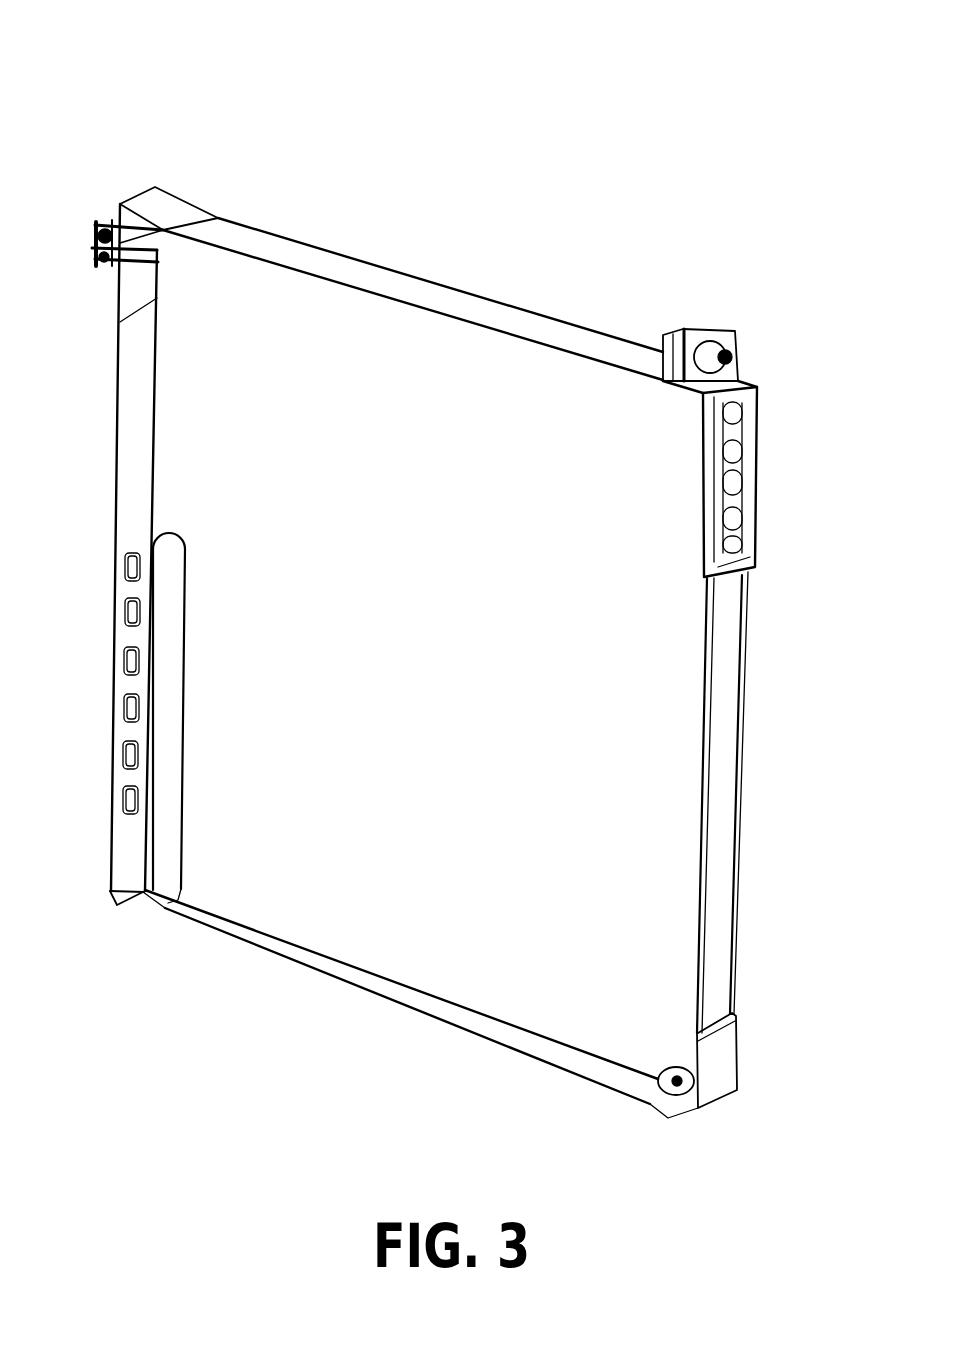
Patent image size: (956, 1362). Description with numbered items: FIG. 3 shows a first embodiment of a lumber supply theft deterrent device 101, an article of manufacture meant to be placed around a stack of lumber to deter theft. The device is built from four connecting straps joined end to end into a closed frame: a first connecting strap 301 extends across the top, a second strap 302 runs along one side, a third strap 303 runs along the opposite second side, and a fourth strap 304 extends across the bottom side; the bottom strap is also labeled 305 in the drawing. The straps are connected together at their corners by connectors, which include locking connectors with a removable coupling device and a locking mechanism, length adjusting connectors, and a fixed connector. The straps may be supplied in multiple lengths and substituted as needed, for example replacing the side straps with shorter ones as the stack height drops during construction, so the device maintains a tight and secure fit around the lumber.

The frame assembly 101 is at (142, 72).
The first connecting strap 301 is at (348, 260).
The second strap 302 is at (740, 377).
The third strap 303 is at (153, 388).
The fourth strap 304 is at (740, 640).
The bottom rail 305 is at (400, 980).